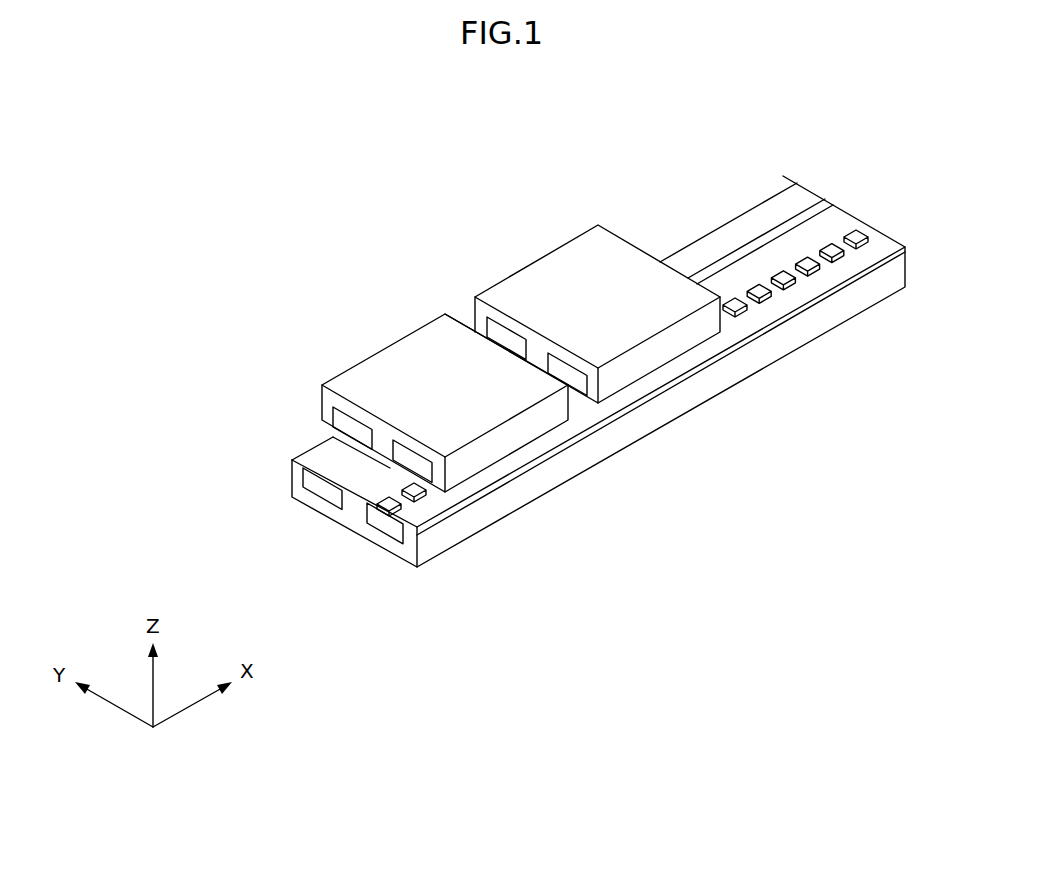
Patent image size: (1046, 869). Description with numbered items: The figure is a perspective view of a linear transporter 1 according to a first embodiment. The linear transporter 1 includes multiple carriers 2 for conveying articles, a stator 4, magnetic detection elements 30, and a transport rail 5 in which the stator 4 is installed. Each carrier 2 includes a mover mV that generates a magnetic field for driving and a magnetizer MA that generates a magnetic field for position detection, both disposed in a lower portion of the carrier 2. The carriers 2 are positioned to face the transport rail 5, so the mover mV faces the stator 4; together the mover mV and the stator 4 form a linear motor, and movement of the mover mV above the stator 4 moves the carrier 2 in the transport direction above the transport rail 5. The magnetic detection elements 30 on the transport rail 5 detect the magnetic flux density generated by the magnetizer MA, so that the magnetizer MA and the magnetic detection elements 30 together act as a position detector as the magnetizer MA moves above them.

The linear transporter 1 is at (386, 133).
The carrier 2 is at (424, 340).
The stator 4 is at (317, 490).
The transport rail 5 is at (603, 438).
The magnetic detection element 30 is at (845, 250).
The mover mV is at (352, 425).
The magnetizer MA is at (580, 378).